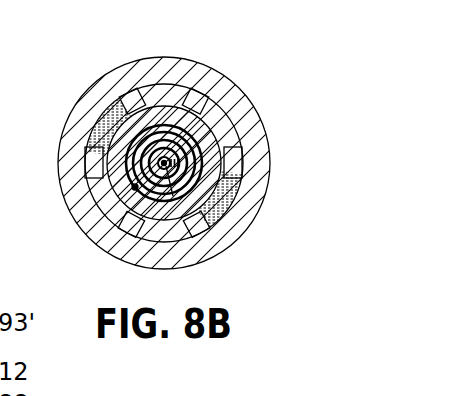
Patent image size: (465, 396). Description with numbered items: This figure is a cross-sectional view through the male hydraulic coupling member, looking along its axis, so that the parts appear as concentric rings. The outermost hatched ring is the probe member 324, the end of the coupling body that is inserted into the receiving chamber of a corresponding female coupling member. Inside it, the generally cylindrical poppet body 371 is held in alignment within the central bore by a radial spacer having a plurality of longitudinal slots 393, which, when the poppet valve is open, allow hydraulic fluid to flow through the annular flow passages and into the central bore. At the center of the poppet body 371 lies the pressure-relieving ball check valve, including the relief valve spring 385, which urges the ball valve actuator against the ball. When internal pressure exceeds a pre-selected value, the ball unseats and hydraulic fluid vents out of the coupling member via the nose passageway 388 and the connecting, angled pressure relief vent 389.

The probe member 324 is at (60, 153).
The poppet body 371 is at (228, 150).
The longitudinal slots 393 is at (127, 100).
The pressure relief vent 389 is at (200, 146).
The nose passageway 388 is at (173, 175).
The relief valve spring 385 is at (133, 189).